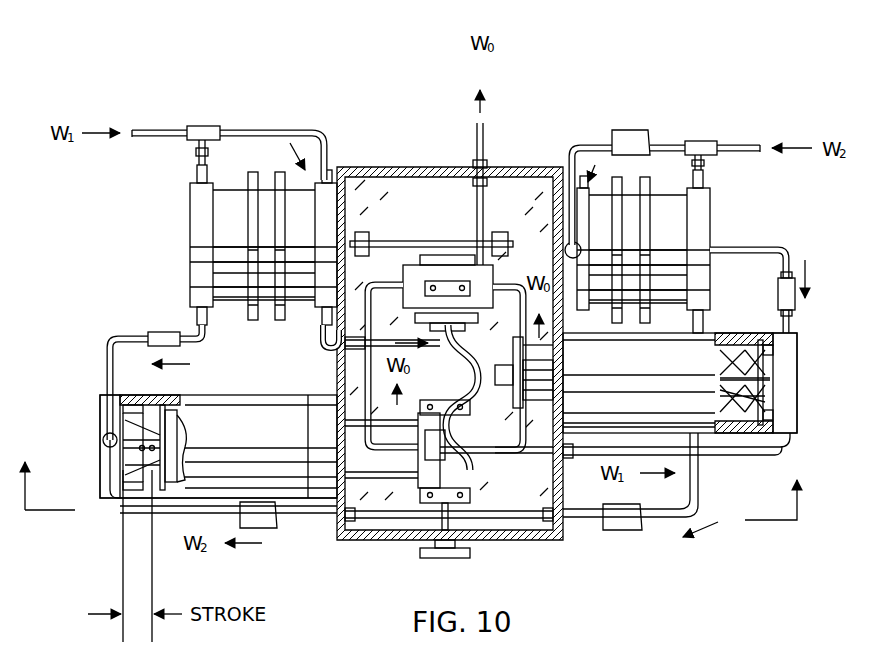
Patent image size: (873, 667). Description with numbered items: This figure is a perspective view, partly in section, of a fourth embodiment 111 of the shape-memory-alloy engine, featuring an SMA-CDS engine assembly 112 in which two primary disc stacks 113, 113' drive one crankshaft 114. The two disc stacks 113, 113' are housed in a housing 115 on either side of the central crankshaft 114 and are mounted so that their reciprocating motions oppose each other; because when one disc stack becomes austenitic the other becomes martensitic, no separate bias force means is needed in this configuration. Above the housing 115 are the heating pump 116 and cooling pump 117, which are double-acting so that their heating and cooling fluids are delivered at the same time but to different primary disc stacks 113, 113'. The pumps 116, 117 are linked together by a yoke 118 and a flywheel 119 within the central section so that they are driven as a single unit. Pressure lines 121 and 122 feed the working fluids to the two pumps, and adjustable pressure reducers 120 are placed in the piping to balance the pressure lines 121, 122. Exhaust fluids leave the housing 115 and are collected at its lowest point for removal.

The fourth embodiment 111 is at (368, 78).
The SMA-CDS engine assembly 112 is at (566, 116).
The primary disc stack 113 is at (446, 386).
The primary disc stack 113' is at (456, 413).
The crankshaft 114 is at (470, 473).
The housing 115 is at (797, 400).
The heating pump 116 is at (707, 233).
The cooling pump 117 is at (190, 275).
The yoke 118 is at (438, 242).
The flywheel 119 is at (395, 255).
The adjustable pressure reducer 120 is at (793, 293).
The pressure line 121 is at (174, 126).
The pressure line 122 is at (742, 140).